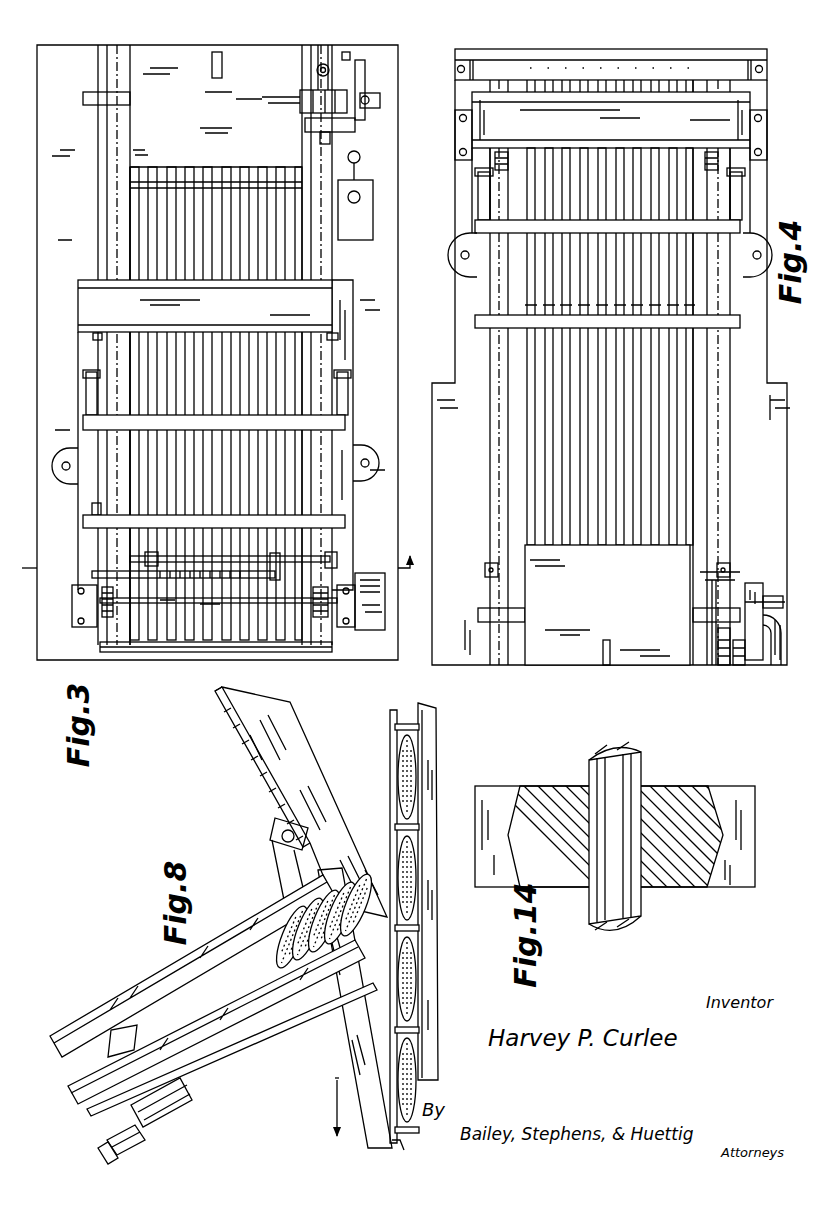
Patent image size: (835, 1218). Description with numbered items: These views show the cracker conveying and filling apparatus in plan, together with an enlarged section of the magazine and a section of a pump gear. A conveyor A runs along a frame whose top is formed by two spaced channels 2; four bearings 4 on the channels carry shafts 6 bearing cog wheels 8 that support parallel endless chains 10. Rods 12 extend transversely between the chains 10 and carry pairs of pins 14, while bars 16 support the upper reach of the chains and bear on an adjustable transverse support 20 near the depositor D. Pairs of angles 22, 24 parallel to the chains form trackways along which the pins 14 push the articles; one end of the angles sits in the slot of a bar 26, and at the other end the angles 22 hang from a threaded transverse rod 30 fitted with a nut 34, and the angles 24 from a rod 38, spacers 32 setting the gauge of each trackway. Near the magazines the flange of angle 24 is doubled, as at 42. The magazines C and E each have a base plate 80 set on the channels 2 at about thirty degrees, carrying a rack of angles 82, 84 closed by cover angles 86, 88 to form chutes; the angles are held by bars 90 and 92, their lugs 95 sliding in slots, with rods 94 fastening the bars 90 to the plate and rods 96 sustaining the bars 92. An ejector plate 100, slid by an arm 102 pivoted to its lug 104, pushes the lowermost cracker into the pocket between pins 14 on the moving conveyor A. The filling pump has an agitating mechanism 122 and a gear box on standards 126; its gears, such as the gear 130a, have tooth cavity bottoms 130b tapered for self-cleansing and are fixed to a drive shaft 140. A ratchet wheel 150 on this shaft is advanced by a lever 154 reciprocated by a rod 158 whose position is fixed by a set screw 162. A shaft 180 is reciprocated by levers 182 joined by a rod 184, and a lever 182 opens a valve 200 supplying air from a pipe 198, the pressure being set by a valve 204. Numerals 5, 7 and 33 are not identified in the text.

In FIG. 3, the channel 2 is at (62, 74).
In FIG. 4, the channel 2 is at (445, 385).
In FIG. 3, the bearing 4 is at (367, 631).
In FIG. 4, the bearing 4 is at (458, 125).
In FIG. 3, the control box 5 is at (372, 218).
In FIG. 3, the shaft 6 is at (310, 606).
In FIG. 3, the section line 7 is at (221, 559).
In FIG. 3, the cog wheel 8 is at (108, 622).
In FIG. 4, the cog wheel 8 is at (494, 160).
In FIG. 3, the endless chain 10 is at (112, 172).
In FIG. 4, the endless chain 10 is at (504, 485).
In FIG. 3, the rod 12 is at (122, 192).
In FIG. 8, the rod 12 is at (418, 722).
In FIG. 3, the pin 14 is at (182, 186).
In FIG. 8, the pin 14 is at (398, 832).
In FIG. 8, the bar 16 is at (432, 768).
In FIG. 4, the supplemental transverse support 20 is at (484, 570).
In FIG. 3, the angle 22 is at (153, 641).
In FIG. 4, the angle 22 is at (689, 82).
In FIG. 3, the angle 24 is at (135, 641).
In FIG. 4, the angle 24 is at (672, 82).
In FIG. 8, the angle 24 is at (366, 1148).
In FIG. 4, the bar 26 is at (645, 66).
In FIG. 3, the transverse rod 30 is at (338, 560).
In FIG. 8, the spacer 32 is at (220, 690).
In FIG. 3, the nut 33 is at (143, 560).
In FIG. 3, the nut 34 is at (314, 592).
In FIG. 3, the transverse rod 38 is at (100, 588).
In FIG. 8, the doubled flange 42 is at (373, 1130).
In FIG. 3, the base plate 80 is at (112, 318).
In FIG. 4, the base plate 80 is at (560, 118).
In FIG. 8, the base plate 80 is at (283, 777).
In FIG. 3, the angle 82 is at (286, 506).
In FIG. 4, the angle 82 is at (710, 356).
In FIG. 3, the angle 84 is at (280, 536).
In FIG. 4, the angle 84 is at (672, 343).
In FIG. 8, the angle 84 is at (82, 1100).
In FIG. 3, the cover angle 86 is at (286, 463).
In FIG. 4, the cover angle 86 is at (708, 264).
In FIG. 3, the cover angle 88 is at (282, 440).
In FIG. 4, the cover angle 88 is at (670, 246).
In FIG. 8, the cover angle 88 is at (91, 1008).
In FIG. 3, the bar 90 is at (93, 421).
In FIG. 4, the bar 90 is at (486, 227).
In FIG. 8, the bar 90 is at (172, 1133).
In FIG. 3, the bar 92 is at (103, 520).
In FIG. 4, the bar 92 is at (490, 322).
In FIG. 3, the rod 94 is at (90, 396).
In FIG. 4, the rod 94 is at (482, 197).
In FIG. 8, the rod 94 is at (243, 1073).
In FIG. 8, the lug 95 is at (192, 1119).
In FIG. 3, the rod 96 is at (91, 522).
In FIG. 8, the ejector plate 100 is at (256, 750).
In FIG. 8, the arm 102 is at (358, 1023).
In FIG. 8, the lug 104 is at (272, 838).
In FIG. 3, the agitating mechanism 122 is at (352, 134).
In FIG. 4, the agitating mechanism 122 is at (769, 599).
In FIG. 3, the standard 126 is at (84, 98).
In FIG. 4, the standard 126 is at (480, 613).
In FIG. 14, the gear 130a is at (549, 876).
In FIG. 14, the tooth cavity bottom 130b is at (512, 812).
In FIG. 4, the drive shaft 140 is at (772, 660).
In FIG. 14, the drive shaft 140 is at (588, 770).
In FIG. 3, the ratchet wheel 150 is at (345, 52).
In FIG. 4, the ratchet wheel 150 is at (740, 664).
In FIG. 3, the lever 154 is at (362, 60).
In FIG. 4, the lever 154 is at (756, 584).
In FIG. 3, the rod 158 is at (373, 108).
In FIG. 3, the set screw 162 is at (365, 96).
In FIG. 3, the shaft 180 is at (318, 132).
In FIG. 3, the lever 182 is at (322, 58).
In FIG. 4, the lever 182 is at (710, 640).
In FIG. 4, the rod 184 is at (718, 600).
In FIG. 4, the pipe 198 is at (720, 662).
In FIG. 3, the valve 200 is at (318, 66).
In FIG. 3, the valve 204 is at (329, 142).
In FIG. 8, the conveyor A is at (418, 931).
In FIG. 4, the magazine C is at (530, 118).
In FIG. 3, the icing or filling depositor D is at (176, 48).
In FIG. 4, the icing or filling depositor D is at (586, 666).
In FIG. 3, the second magazine E is at (118, 298).
In FIG. 8, the second magazine E is at (121, 984).